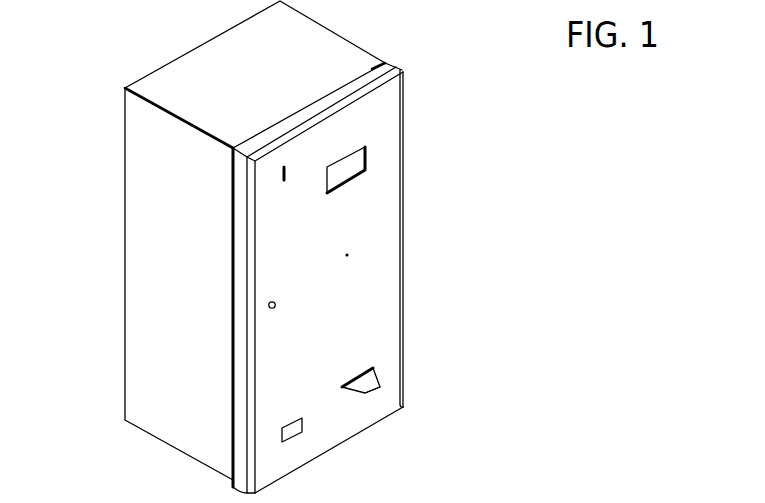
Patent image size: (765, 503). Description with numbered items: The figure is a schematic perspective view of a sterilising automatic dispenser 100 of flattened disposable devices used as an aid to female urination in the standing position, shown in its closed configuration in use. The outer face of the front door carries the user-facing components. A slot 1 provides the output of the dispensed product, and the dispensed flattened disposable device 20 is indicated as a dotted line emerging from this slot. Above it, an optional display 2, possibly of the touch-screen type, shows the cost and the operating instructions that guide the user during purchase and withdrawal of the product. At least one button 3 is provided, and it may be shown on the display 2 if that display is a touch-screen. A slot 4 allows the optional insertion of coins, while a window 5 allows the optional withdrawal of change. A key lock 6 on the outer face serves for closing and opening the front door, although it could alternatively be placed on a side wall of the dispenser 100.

The automatic dispenser 100 is at (582, 220).
The slot 1 is at (378, 371).
The display 2 is at (367, 172).
The button 3 is at (349, 255).
The slot for the insertion of coins 4 is at (280, 175).
The window 5 is at (282, 440).
The key lock 6 is at (268, 305).
The flattened disposable device 20 is at (366, 394).